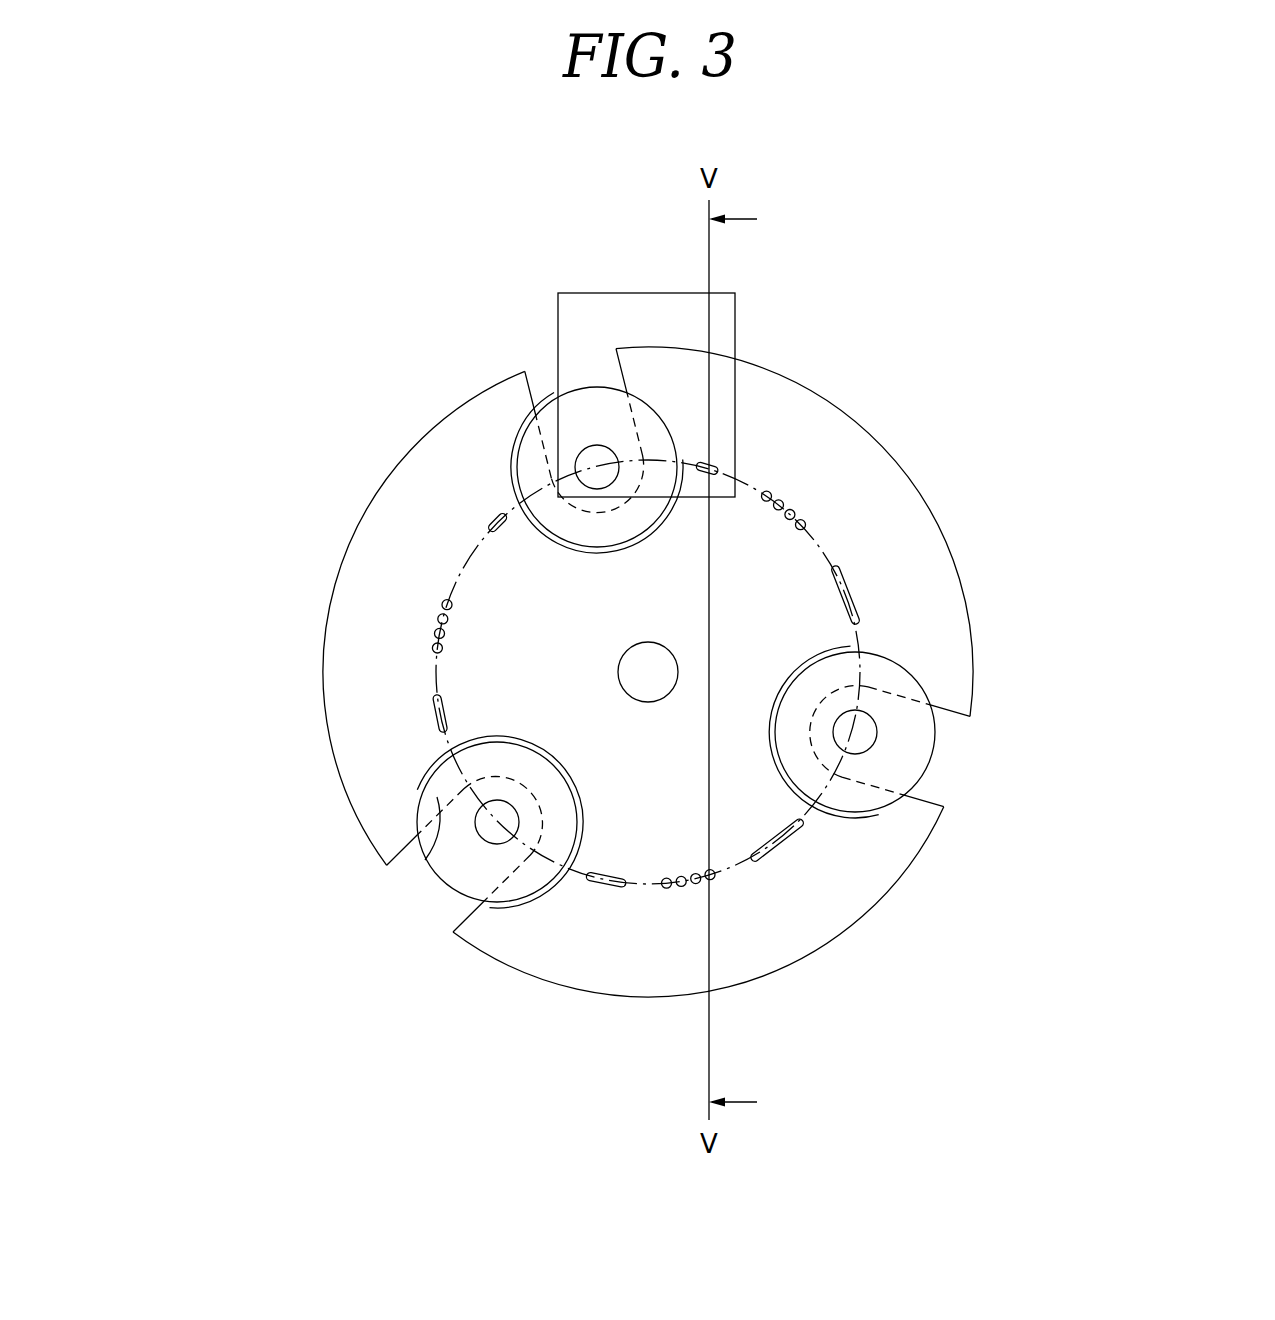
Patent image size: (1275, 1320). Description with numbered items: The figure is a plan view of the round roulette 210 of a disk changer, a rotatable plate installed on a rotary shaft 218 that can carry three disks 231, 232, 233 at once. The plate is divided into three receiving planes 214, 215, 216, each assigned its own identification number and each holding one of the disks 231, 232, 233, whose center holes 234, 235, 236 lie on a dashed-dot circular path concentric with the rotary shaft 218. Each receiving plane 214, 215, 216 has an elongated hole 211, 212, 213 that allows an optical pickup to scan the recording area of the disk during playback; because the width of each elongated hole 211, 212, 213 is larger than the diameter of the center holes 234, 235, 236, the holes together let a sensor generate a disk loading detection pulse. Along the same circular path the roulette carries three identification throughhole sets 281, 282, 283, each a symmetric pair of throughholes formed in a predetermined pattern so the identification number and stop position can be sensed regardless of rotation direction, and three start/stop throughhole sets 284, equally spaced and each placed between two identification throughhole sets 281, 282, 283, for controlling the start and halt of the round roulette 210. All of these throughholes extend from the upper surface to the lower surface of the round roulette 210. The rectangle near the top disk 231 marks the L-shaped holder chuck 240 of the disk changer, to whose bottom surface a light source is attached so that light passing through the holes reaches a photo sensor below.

The round roulette 210 is at (931, 137).
The elongated hole 211 is at (556, 378).
The elongated hole 212 is at (430, 895).
The elongated hole 213 is at (933, 782).
The receiving plane 214 is at (663, 413).
The receiving plane 215 is at (435, 797).
The receiving plane 216 is at (910, 665).
The rotary shaft 218 is at (632, 660).
The disk 231 is at (590, 405).
The disk 232 is at (452, 932).
The disk 233 is at (912, 755).
The center hole 234 is at (593, 457).
The center hole 235 is at (485, 835).
The center hole 236 is at (865, 732).
The L-shaped holder chuck 240 is at (720, 305).
The identification throughhole set 281 is at (713, 468).
The identification throughhole set 282 is at (437, 710).
The identification throughhole set 283 is at (849, 582).
The start/stop throughhole set 284 is at (772, 482).